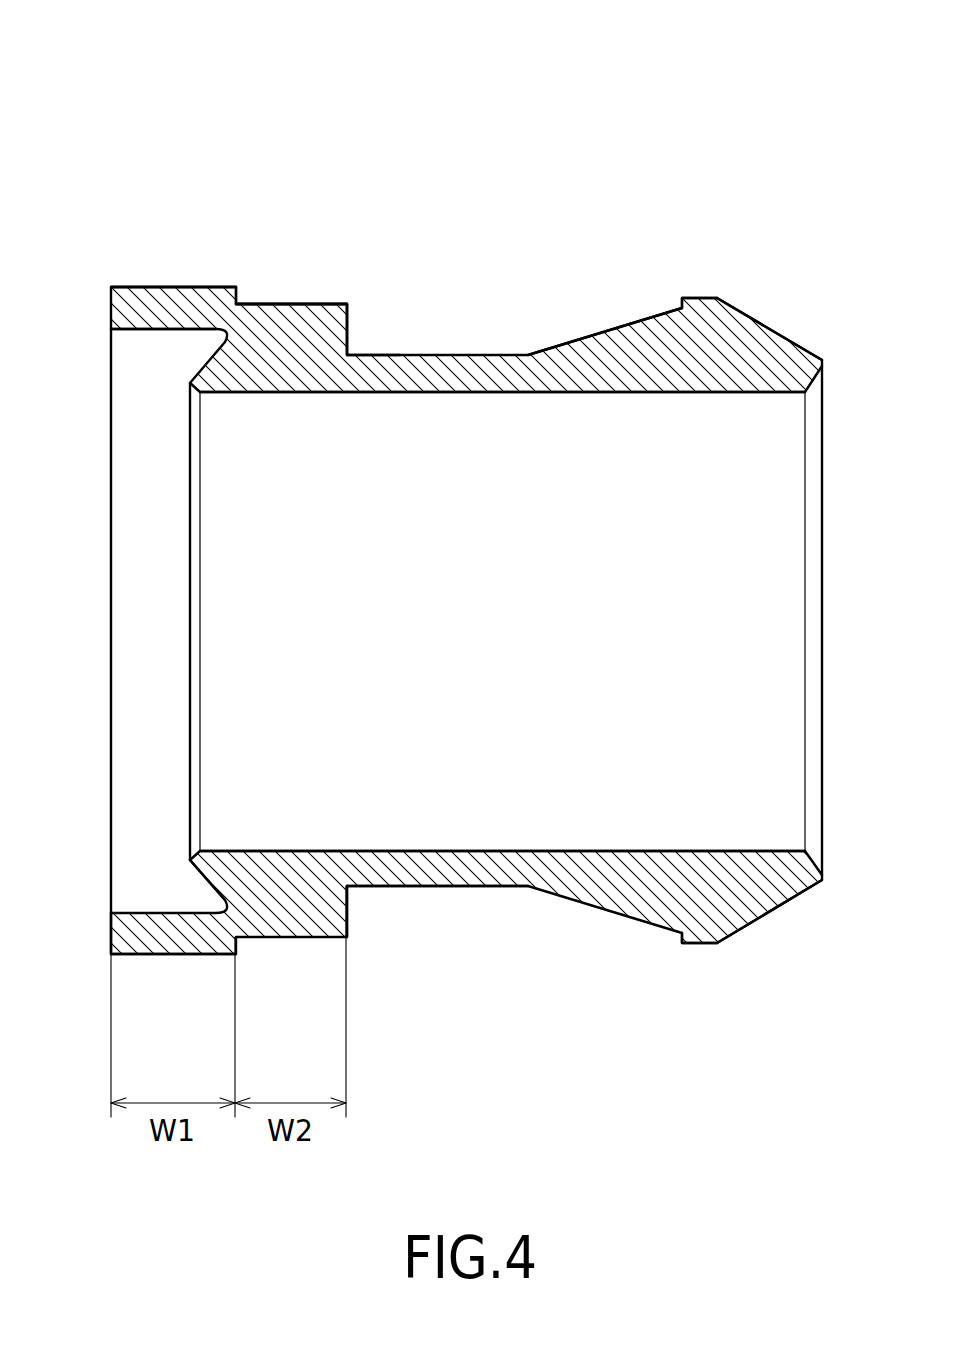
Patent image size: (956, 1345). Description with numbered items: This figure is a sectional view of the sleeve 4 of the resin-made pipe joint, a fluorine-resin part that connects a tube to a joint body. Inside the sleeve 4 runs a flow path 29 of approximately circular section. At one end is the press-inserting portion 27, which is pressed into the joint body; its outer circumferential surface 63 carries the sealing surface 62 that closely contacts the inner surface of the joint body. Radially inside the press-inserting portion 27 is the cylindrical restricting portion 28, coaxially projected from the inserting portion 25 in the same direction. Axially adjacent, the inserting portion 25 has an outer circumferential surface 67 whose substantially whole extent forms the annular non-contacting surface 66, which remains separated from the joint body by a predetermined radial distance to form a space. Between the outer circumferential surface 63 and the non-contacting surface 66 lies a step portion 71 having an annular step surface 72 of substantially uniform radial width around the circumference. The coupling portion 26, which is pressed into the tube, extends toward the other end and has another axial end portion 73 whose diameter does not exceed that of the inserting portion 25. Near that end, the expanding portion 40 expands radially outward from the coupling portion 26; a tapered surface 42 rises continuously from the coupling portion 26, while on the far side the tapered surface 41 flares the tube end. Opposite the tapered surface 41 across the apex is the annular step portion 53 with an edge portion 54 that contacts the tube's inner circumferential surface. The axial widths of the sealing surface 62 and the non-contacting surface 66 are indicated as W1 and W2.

The sleeve 4 is at (220, 155).
The sealing surface 62 is at (157, 287).
The outer circumferential surface of the press-inserting portion 63 is at (157, 287).
The annular step surface 72 is at (242, 298).
The step portion 71 is at (252, 303).
The non-contacting surface 66 is at (330, 303).
The outer circumferential surface of the inserting portion 67 is at (330, 303).
The another axial end portion of the coupling portion 73 is at (357, 366).
The tapered surface 42 is at (573, 341).
The step portion 53 is at (678, 295).
The tapered surface 41 is at (770, 329).
The flow path 29 is at (480, 672).
The restricting portion 28 is at (195, 869).
The press-inserting portion 27 is at (108, 953).
The inserting portion 25 is at (349, 925).
The coupling portion 26 is at (462, 888).
The edge portion 54 is at (681, 944).
The expanding portion 40 is at (764, 920).